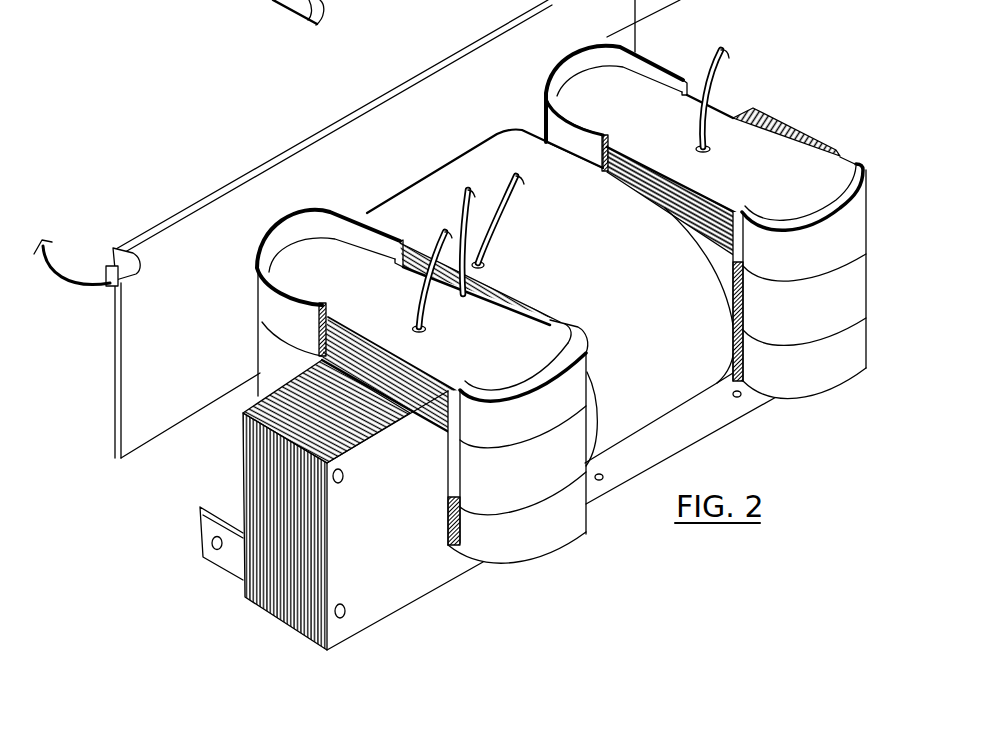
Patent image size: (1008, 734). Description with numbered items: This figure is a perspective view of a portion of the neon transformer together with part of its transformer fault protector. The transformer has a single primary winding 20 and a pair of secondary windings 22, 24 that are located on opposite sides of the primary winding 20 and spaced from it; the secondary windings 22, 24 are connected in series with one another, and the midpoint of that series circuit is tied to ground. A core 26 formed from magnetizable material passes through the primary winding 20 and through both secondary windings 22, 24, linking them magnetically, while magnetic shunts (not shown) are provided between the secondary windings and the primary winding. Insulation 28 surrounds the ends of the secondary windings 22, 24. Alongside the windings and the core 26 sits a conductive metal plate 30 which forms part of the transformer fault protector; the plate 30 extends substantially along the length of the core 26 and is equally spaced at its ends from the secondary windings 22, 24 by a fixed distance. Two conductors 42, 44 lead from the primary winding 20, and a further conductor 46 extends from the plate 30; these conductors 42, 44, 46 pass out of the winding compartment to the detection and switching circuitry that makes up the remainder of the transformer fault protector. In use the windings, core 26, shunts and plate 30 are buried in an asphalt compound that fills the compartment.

The primary winding 20 is at (657, 390).
The secondary winding 22 is at (522, 337).
The secondary winding 24 is at (812, 200).
The core 26 is at (428, 563).
The insulation 28 is at (281, 358).
The conductive metal plate 30 is at (333, 229).
The conductor 42 is at (504, 212).
The conductor 44 is at (459, 211).
The conductor 46 is at (70, 261).